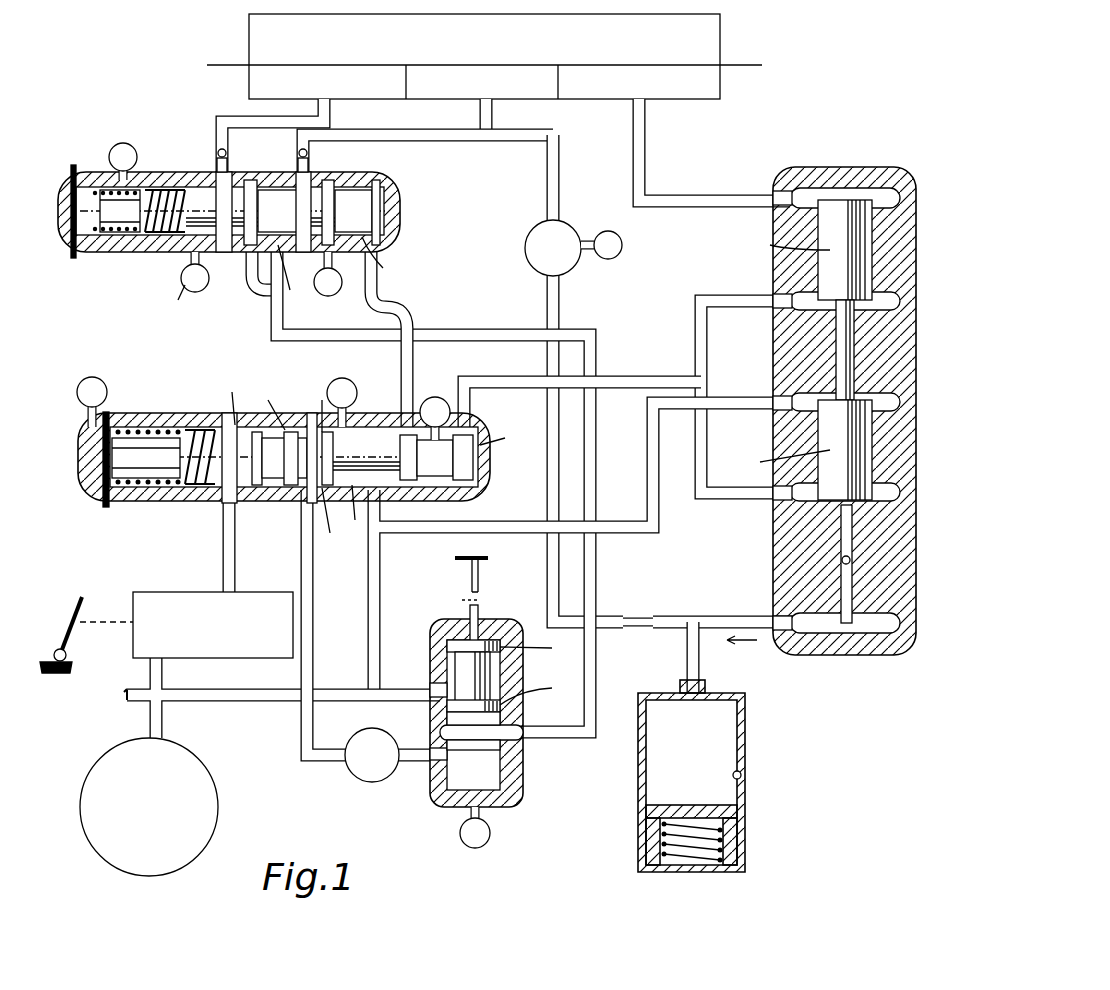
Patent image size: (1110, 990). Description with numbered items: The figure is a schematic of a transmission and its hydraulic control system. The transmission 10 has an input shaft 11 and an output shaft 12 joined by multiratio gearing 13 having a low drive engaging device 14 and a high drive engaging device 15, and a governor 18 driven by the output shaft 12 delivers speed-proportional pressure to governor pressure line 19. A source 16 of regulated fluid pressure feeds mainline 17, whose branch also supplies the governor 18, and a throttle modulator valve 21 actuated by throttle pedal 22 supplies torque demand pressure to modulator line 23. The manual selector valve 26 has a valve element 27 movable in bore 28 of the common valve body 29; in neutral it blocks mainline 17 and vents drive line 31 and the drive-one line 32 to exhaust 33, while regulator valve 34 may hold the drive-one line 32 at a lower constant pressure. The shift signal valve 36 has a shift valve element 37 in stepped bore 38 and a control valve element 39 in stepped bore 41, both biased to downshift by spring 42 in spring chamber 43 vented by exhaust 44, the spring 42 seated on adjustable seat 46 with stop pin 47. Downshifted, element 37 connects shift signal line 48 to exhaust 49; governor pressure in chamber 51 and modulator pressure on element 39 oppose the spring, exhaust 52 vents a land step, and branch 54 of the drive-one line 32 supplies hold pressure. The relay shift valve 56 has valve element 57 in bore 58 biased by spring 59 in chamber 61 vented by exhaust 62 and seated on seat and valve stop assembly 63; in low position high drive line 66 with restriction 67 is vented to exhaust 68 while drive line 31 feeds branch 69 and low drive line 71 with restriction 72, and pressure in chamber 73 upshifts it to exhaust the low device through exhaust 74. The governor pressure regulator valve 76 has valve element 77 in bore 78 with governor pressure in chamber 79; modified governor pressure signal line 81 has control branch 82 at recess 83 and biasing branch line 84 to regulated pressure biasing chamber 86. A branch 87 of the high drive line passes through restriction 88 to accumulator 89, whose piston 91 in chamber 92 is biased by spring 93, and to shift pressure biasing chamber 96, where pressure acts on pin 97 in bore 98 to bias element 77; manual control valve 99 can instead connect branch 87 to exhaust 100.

The transmission 10 is at (499, 72).
The input shaft 11 is at (232, 65).
The output shaft 12 is at (740, 72).
The multiratio gearing 13 is at (710, 45).
The low drive engaging device 14 is at (249, 80).
The high drive engaging device 15 is at (540, 97).
The source of regulated fluid pressure 16 is at (85, 785).
The mainline 17 is at (735, 405).
The governor 18 is at (670, 98).
The governor pressure line 19 is at (645, 178).
The throttle modulator valve 21 is at (245, 655).
The throttle pedal 22 is at (60, 605).
The modulator line 23 is at (222, 560).
The manual selector valve 26 is at (499, 713).
The valve element 27 is at (465, 625).
The bore 28 is at (495, 720).
The valve body 29 is at (400, 225).
The drive line 31 is at (445, 330).
The drive-1 line 32 is at (315, 565).
The exhaust 33 is at (465, 848).
The regulator valve 34 is at (355, 782).
The shift signal valve 36 is at (287, 468).
The shift valve element 37 is at (412, 485).
The stepped bore 38 is at (460, 485).
The control valve element 39 is at (285, 480).
The stepped bore 41 is at (290, 430).
The spring 42 is at (120, 490).
The spring chamber 43 is at (225, 415).
The exhaust 44 is at (78, 390).
The adjustable seat 46 is at (100, 435).
The stop pin 47 is at (112, 458).
The shift signal line 48 is at (412, 375).
The exhaust 49 is at (433, 397).
The chamber 51 is at (470, 462).
The exhaust 52 is at (355, 385).
The branch 54 is at (310, 490).
The relay shift valve 56 is at (494, 481).
The valve element 57 is at (285, 205).
The bore 58 is at (352, 205).
The spring 59 is at (160, 200).
The chamber 61 is at (185, 230).
The exhaust 62 is at (108, 150).
The seat and valve stop assembly 63 is at (73, 215).
The high drive line 66 is at (435, 136).
The restriction 67 is at (295, 160).
The exhaust 68 is at (328, 297).
The branch 69 is at (255, 285).
The low drive line 71 is at (215, 122).
The restriction 72 is at (215, 158).
The chamber 73 is at (398, 192).
The exhaust 74 is at (195, 293).
The governor pressure regulator valve 76 is at (821, 442).
The valve element 77 is at (840, 345).
The bore 78 is at (882, 335).
The chamber 79 is at (805, 190).
The modified governor pressure signal line 81 is at (495, 382).
The control branch 82 is at (750, 300).
The recess 83 is at (875, 372).
The biasing branch line 84 is at (722, 500).
The regulated pressure biasing chamber 86 is at (805, 495).
The branch 87 is at (562, 190).
The restriction 88 is at (635, 632).
The accumulator 89 is at (725, 776).
The piston 91 is at (740, 811).
The chamber 92 is at (745, 775).
The spring 93 is at (735, 838).
The shift pressure biasing chamber 96 is at (860, 635).
The pin 97 is at (852, 575).
The bore 98 is at (855, 560).
The manual hysteresis-type control valve 99 is at (575, 270).
The exhaust 100 is at (615, 258).